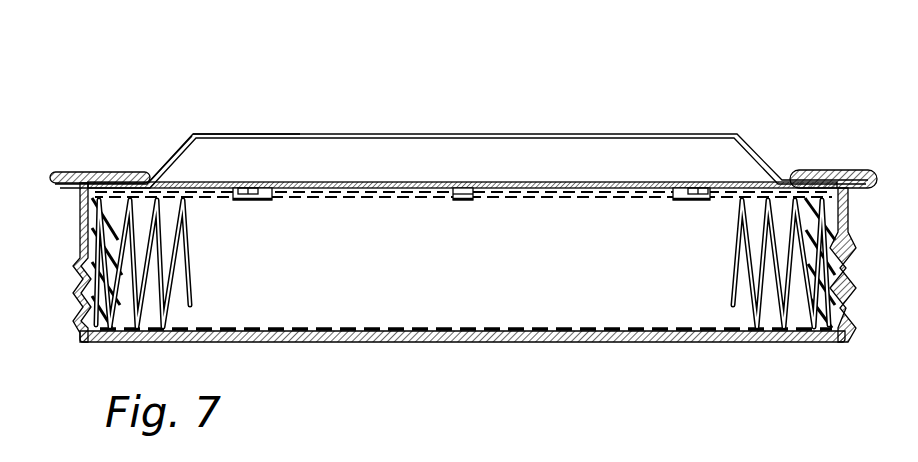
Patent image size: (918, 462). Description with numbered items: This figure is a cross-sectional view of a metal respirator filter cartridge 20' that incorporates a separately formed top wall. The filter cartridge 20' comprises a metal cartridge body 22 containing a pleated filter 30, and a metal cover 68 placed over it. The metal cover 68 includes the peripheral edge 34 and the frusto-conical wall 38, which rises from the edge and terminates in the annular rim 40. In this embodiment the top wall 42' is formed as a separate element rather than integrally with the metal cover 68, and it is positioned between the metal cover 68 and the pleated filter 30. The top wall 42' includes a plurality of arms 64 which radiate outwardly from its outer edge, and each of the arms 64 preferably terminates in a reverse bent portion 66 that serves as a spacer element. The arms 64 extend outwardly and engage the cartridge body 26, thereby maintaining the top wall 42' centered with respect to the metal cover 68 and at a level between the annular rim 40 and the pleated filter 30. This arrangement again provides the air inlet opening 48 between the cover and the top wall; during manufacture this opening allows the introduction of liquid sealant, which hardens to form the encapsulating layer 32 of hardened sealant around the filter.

The filter cartridge 20' is at (651, 63).
The metal cartridge body 22 is at (445, 343).
The cartridge body 26 is at (80, 213).
The pleated filter 30 is at (192, 293).
The encapsulating layer 32 is at (112, 214).
The peripheral edge 34 is at (78, 172).
The frusto-conical wall 38 is at (152, 175).
The annular rim 40 is at (205, 133).
The top wall 42' is at (462, 149).
The air inlet opening 48 is at (280, 164).
The arms 64 is at (832, 172).
The reverse bent portion 66 is at (268, 200).
The metal cover 68 is at (414, 134).